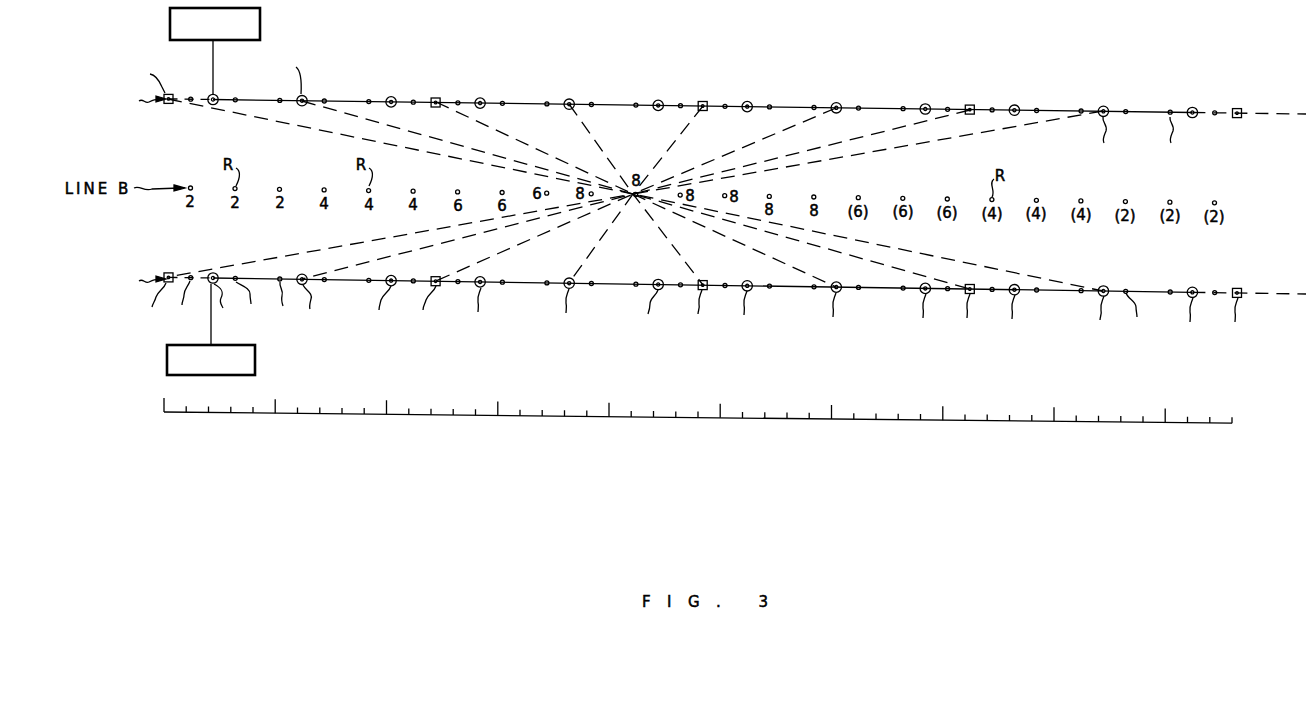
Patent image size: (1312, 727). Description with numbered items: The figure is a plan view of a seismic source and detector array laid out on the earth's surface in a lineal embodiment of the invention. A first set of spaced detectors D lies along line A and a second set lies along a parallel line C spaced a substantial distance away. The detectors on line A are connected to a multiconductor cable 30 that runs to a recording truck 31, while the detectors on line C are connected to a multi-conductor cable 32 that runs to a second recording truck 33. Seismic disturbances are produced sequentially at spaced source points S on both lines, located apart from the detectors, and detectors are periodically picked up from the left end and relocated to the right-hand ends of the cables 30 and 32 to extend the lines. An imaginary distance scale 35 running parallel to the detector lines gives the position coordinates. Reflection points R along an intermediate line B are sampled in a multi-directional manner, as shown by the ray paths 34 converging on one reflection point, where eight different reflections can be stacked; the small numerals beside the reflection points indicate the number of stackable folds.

The multiconductor cable 30 is at (786, 290).
The recording truck 31 is at (255, 357).
The multi-conductor cable 32 is at (786, 105).
The second recording truck 33 is at (260, 24).
The ray paths 34 is at (521, 144).
The imaginary distance scale 35 is at (148, 407).